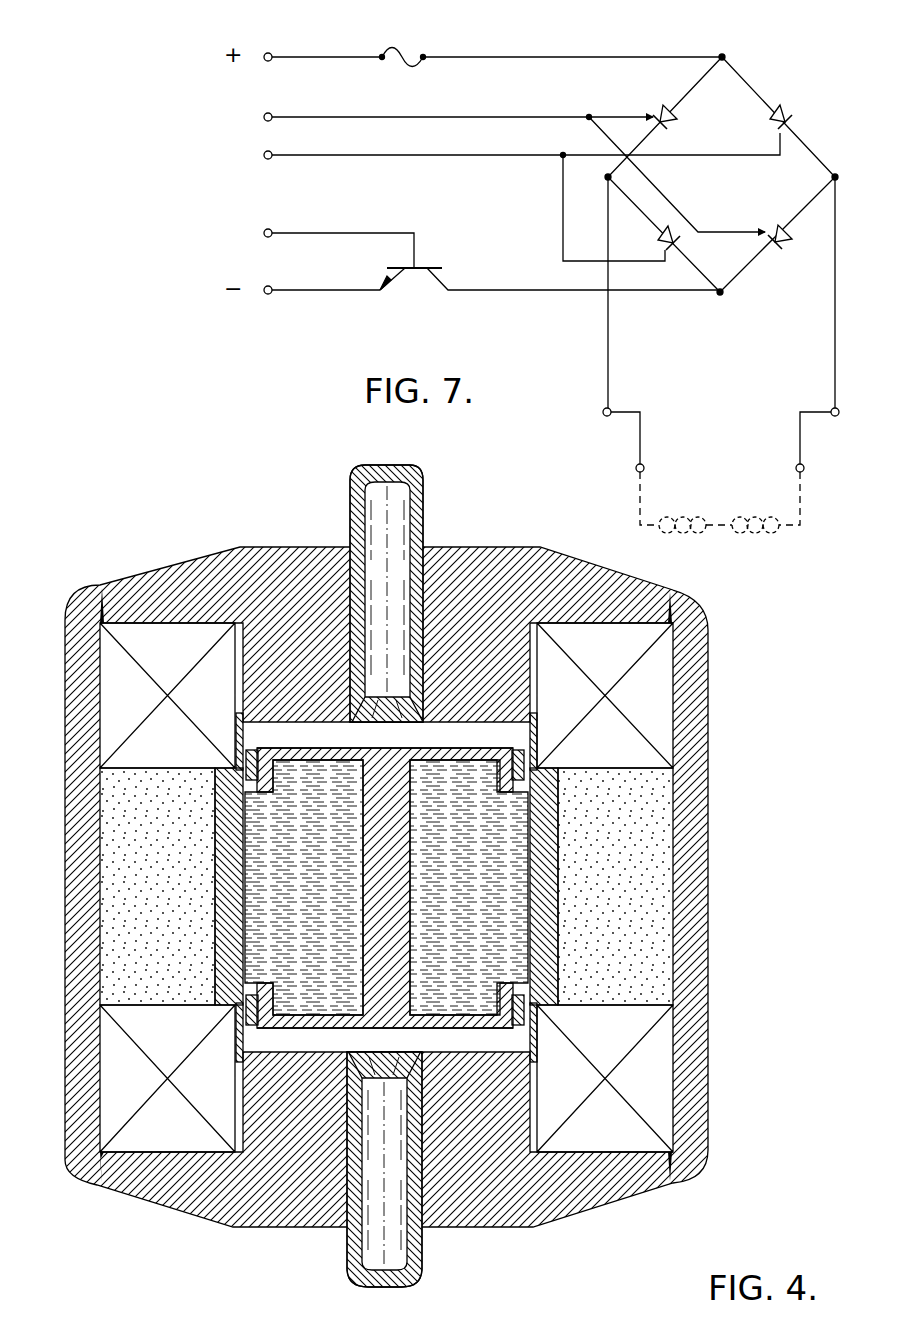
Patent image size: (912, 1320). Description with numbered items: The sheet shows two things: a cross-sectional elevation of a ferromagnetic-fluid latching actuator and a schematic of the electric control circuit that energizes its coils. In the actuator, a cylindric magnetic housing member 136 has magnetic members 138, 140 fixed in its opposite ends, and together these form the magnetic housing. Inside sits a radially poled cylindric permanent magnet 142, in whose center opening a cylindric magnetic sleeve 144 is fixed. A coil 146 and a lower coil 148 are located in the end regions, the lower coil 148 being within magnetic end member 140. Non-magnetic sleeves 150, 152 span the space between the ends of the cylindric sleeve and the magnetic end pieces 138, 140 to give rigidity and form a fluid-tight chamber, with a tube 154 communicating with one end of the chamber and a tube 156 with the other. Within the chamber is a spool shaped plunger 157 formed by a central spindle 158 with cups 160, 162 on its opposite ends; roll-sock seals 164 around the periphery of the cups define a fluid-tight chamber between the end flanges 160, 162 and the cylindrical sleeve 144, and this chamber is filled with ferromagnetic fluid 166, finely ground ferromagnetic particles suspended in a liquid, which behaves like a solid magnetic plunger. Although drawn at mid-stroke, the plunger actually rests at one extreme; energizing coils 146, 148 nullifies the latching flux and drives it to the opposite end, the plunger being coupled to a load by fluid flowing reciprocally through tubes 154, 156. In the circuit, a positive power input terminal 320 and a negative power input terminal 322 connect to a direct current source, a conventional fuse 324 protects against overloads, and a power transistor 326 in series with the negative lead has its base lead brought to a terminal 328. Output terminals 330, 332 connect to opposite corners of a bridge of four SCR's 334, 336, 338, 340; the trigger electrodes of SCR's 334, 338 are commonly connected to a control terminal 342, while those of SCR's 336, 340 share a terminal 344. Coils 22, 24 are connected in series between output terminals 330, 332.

In FIG. 7, the positive power input terminal 320 is at (268, 52).
In FIG. 7, the fuse 324 is at (404, 52).
In FIG. 7, the control terminal 342 is at (268, 113).
In FIG. 7, the terminal 344 is at (268, 151).
In FIG. 7, the terminal 328 is at (268, 229).
In FIG. 7, the negative power input terminal 322 is at (268, 286).
In FIG. 7, the power transistor 326 is at (438, 273).
In FIG. 7, the SCR 334 is at (674, 123).
In FIG. 7, the SCR 336 is at (787, 108).
In FIG. 7, the SCR 338 is at (790, 238).
In FIG. 7, the SCR 340 is at (658, 238).
In FIG. 7, the output terminal 330 is at (603, 414).
In FIG. 7, the output terminal 332 is at (832, 415).
In FIG. 7, the coil 22 is at (683, 517).
In FIG. 7, the coil 24 is at (752, 517).
In FIG. 4, the cylindric magnetic housing member 136 is at (692, 822).
In FIG. 4, the magnetic member 138 is at (487, 560).
In FIG. 4, the magnetic member 140 is at (252, 1215).
In FIG. 4, the radially poled cylindric permanent magnet 142 is at (624, 916).
In FIG. 4, the cylindric magnetic sleeve 144 is at (546, 851).
In FIG. 4, the coil 146 is at (617, 659).
In FIG. 4, the lower coil 148 is at (614, 1042).
In FIG. 4, the non-magnetic sleeve 150 is at (236, 728).
In FIG. 4, the non-magnetic sleeve 152 is at (235, 1048).
In FIG. 4, the tube 154 is at (423, 517).
In FIG. 4, the tube 156 is at (416, 1248).
In FIG. 4, the spool shaped plunger 157 is at (386, 888).
In FIG. 4, the central spindle 158 is at (396, 892).
In FIG. 4, the cup 160 is at (388, 750).
In FIG. 4, the cup 162 is at (316, 1024).
In FIG. 4, the roll-sock seal 164 is at (252, 750).
In FIG. 4, the ferromagnetic fluid 166 is at (304, 887).